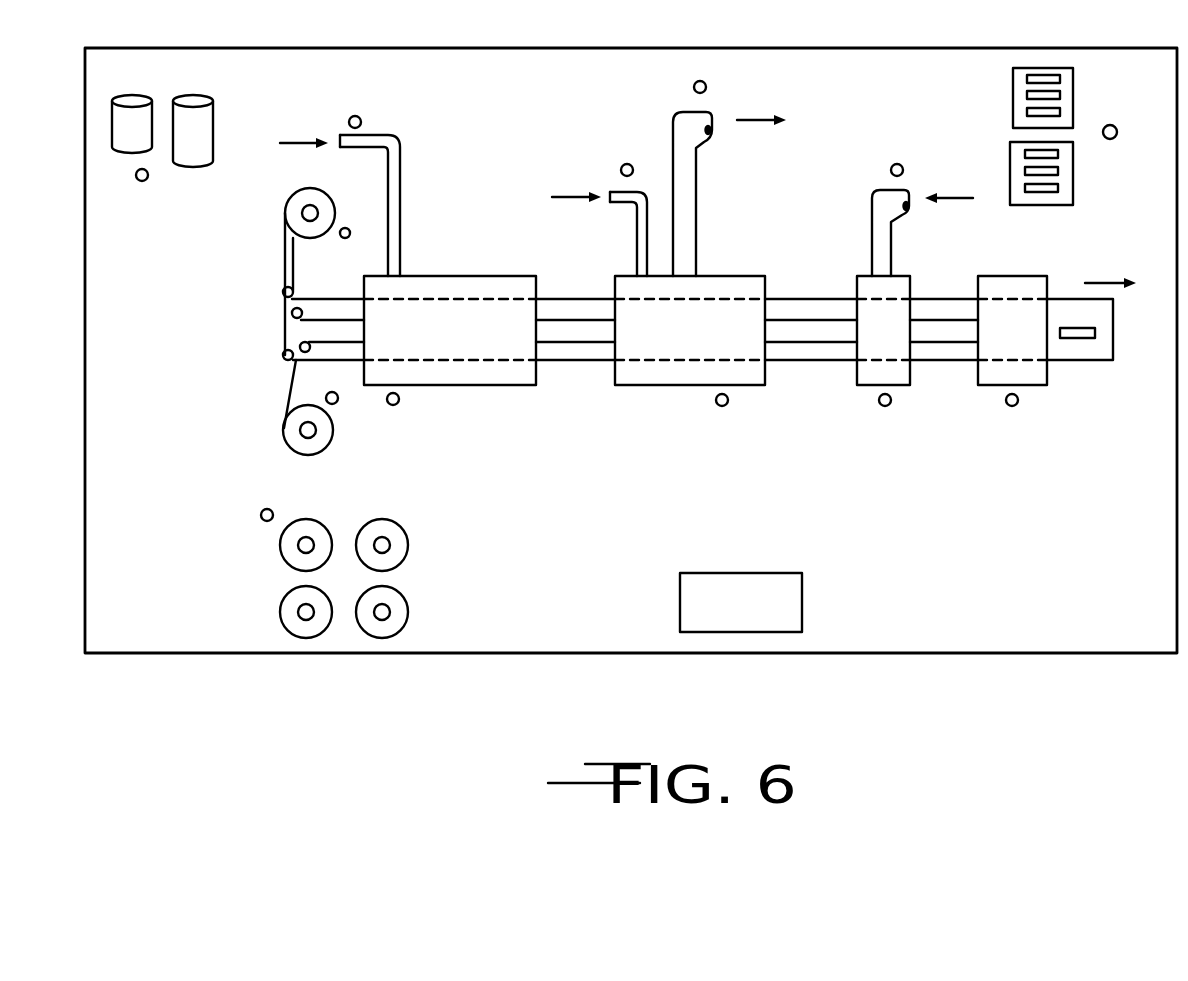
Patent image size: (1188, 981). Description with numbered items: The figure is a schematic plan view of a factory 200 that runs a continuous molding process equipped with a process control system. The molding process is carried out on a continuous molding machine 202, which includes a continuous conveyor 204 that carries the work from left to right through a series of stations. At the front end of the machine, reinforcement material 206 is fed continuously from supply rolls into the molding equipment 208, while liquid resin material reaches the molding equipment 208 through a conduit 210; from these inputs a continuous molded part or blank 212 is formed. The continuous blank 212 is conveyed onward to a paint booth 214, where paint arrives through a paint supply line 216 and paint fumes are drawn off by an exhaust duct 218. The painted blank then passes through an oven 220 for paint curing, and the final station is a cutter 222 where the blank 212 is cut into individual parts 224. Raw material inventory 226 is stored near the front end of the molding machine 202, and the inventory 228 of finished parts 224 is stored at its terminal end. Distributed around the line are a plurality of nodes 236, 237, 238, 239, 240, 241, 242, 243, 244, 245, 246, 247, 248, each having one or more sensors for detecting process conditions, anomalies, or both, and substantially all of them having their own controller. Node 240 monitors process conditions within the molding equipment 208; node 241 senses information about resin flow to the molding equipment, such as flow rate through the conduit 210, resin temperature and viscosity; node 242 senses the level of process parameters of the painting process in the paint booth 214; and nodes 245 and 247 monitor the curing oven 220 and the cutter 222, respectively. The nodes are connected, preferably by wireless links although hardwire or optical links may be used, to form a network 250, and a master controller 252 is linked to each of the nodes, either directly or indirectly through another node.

The factory 200 is at (310, 758).
The continuous molding machine 202 is at (563, 443).
The continuous conveyor 204 is at (283, 330).
The reinforcement material 206 is at (283, 247).
The molding equipment 208 is at (460, 385).
The conduit 210 is at (400, 203).
The continuous molded part or blank 212 is at (575, 342).
The paint booth 214 is at (767, 374).
The paint supply line 216 is at (637, 224).
The exhaust duct 218 is at (696, 200).
The oven 220 is at (853, 376).
The cutter 222 is at (990, 386).
The individual parts 224 is at (1078, 338).
The raw material inventory 226 is at (213, 116).
The inventory of finished parts 228 is at (1013, 123).
The node 236 is at (142, 181).
The node 237 is at (262, 510).
The node 238 is at (344, 239).
The node 239 is at (338, 401).
The node 240 is at (399, 402).
The node 241 is at (351, 117).
The node 242 is at (723, 406).
The node 243 is at (629, 164).
The node 244 is at (706, 84).
The node 245 is at (891, 402).
The node 246 is at (897, 164).
The node 247 is at (1011, 406).
The node 248 is at (1113, 125).
The network 250 is at (948, 640).
The master controller 252 is at (680, 593).